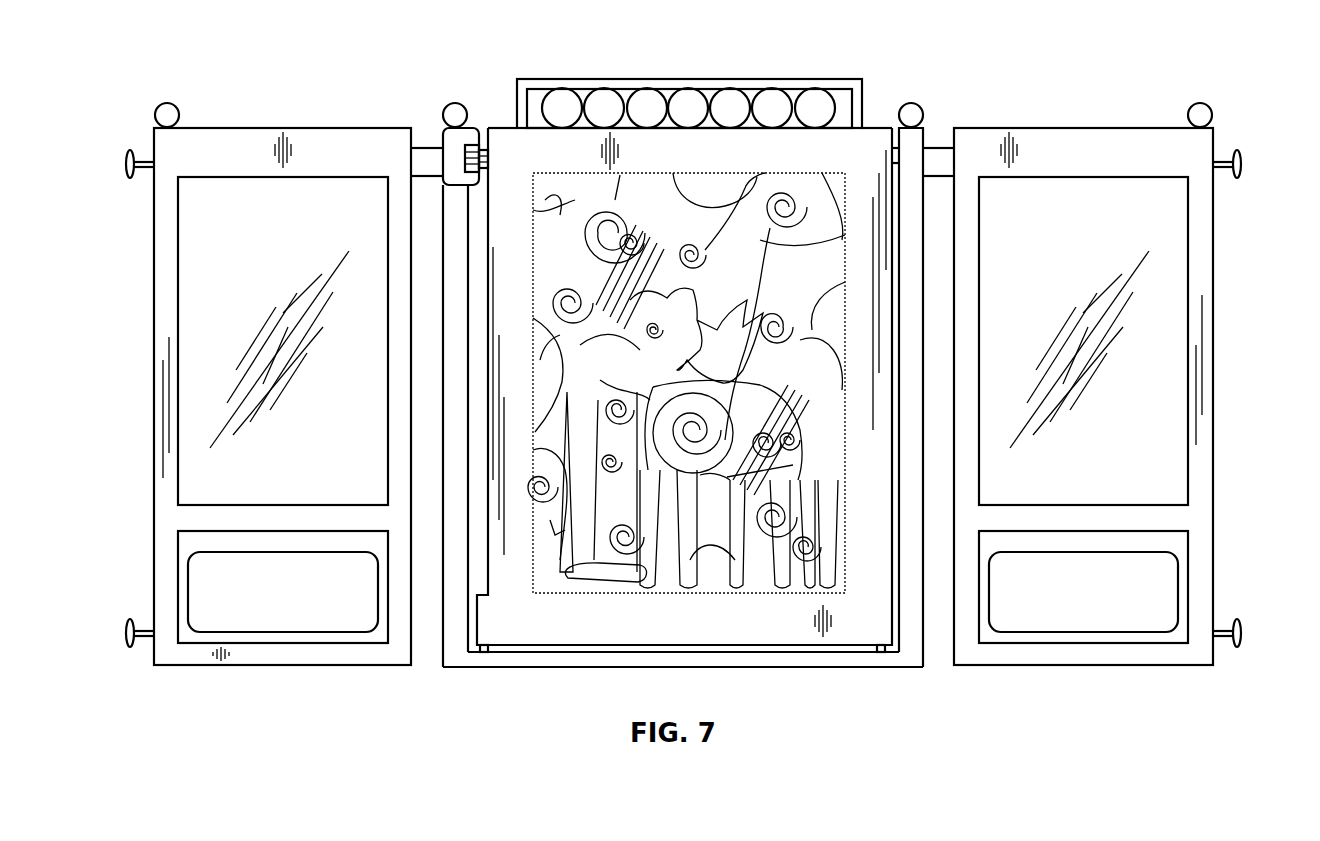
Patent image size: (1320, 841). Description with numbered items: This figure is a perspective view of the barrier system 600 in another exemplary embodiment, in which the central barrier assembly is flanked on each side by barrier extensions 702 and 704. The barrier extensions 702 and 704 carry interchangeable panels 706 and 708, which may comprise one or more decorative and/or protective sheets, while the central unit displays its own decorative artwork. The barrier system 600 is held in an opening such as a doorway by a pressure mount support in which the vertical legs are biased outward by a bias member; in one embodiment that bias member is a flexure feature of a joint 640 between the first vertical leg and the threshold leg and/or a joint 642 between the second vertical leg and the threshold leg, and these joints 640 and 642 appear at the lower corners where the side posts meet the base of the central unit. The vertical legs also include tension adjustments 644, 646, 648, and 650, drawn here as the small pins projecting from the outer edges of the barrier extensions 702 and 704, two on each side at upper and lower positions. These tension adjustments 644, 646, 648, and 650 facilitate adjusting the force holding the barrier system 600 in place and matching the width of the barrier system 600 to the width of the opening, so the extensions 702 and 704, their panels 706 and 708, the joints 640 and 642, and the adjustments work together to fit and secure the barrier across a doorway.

The barrier system 600 is at (774, 66).
The joint 640 is at (443, 662).
The joint 642 is at (923, 667).
The tension adjustment 644 is at (131, 150).
The tension adjustment 646 is at (131, 620).
The tension adjustment 648 is at (1236, 150).
The tension adjustment 650 is at (1236, 620).
The barrier extension 702 is at (253, 371).
The barrier extension 704 is at (1129, 371).
The interchangeable panel 706 is at (295, 238).
The interchangeable panel 708 is at (1114, 240).